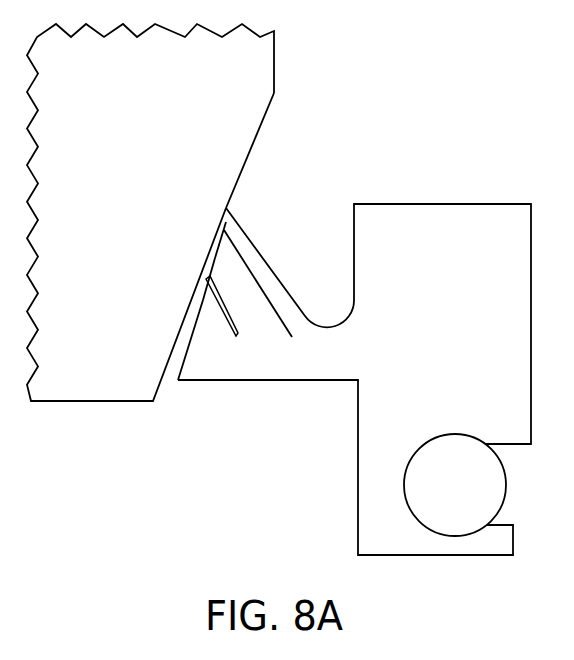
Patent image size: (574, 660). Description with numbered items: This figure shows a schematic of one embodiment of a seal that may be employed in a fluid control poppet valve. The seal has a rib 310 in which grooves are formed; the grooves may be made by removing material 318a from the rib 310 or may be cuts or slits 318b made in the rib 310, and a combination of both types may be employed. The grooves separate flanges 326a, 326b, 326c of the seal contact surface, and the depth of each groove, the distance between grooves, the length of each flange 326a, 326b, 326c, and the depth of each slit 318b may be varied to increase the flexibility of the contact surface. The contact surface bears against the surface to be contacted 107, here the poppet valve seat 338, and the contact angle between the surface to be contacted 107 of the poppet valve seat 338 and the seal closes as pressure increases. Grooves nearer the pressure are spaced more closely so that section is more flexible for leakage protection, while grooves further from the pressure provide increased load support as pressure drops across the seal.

The poppet valve seat 338 is at (157, 107).
The surface to be contacted 107 is at (269, 107).
The flange 326a is at (227, 228).
The flange 326b is at (222, 262).
The flange 326c is at (195, 332).
The removed material 318a is at (222, 307).
The slit 318b is at (243, 257).
The rib 310 is at (243, 372).